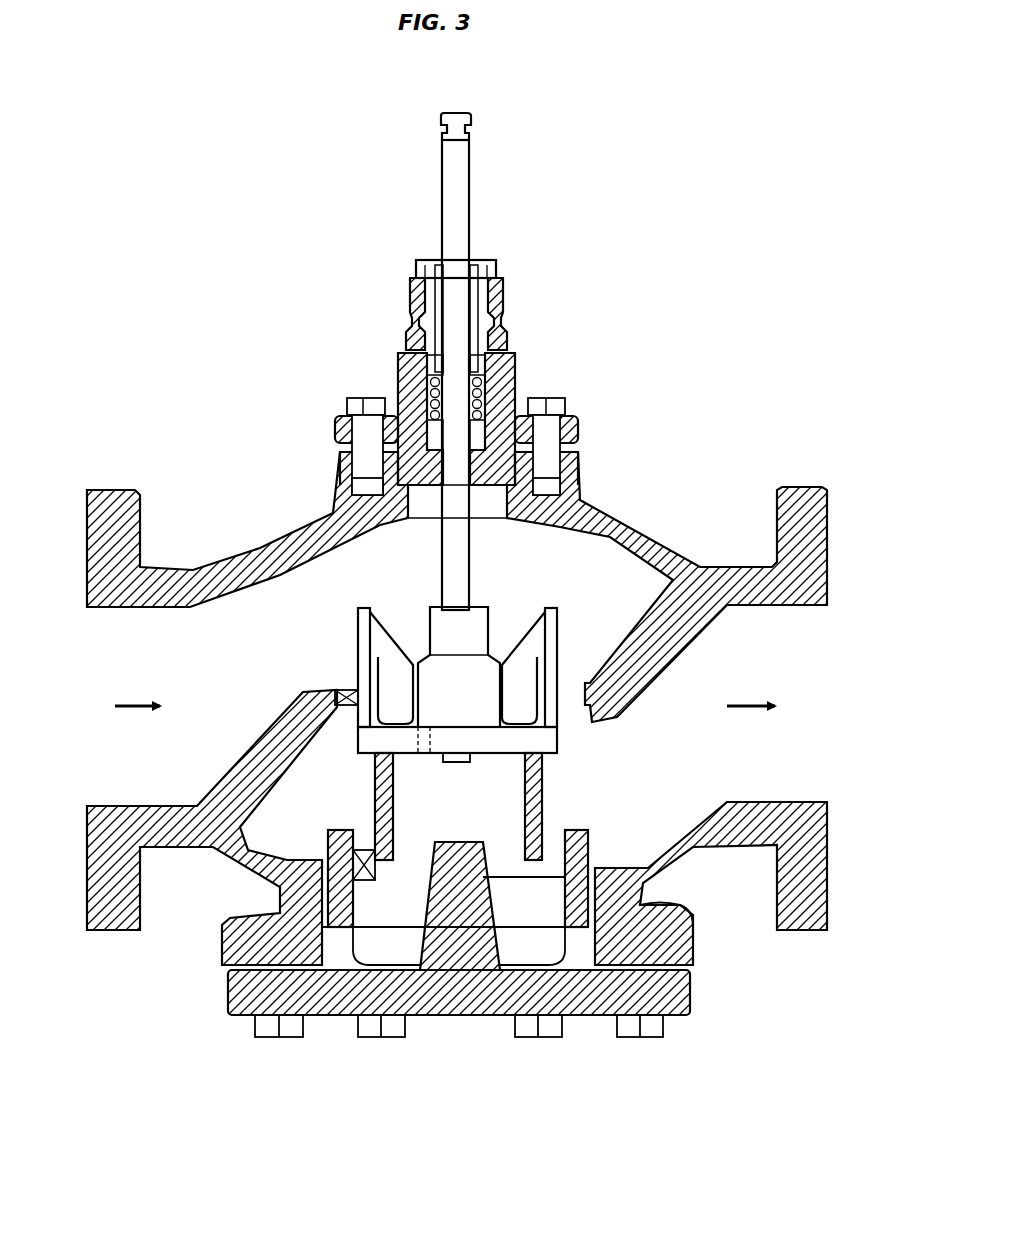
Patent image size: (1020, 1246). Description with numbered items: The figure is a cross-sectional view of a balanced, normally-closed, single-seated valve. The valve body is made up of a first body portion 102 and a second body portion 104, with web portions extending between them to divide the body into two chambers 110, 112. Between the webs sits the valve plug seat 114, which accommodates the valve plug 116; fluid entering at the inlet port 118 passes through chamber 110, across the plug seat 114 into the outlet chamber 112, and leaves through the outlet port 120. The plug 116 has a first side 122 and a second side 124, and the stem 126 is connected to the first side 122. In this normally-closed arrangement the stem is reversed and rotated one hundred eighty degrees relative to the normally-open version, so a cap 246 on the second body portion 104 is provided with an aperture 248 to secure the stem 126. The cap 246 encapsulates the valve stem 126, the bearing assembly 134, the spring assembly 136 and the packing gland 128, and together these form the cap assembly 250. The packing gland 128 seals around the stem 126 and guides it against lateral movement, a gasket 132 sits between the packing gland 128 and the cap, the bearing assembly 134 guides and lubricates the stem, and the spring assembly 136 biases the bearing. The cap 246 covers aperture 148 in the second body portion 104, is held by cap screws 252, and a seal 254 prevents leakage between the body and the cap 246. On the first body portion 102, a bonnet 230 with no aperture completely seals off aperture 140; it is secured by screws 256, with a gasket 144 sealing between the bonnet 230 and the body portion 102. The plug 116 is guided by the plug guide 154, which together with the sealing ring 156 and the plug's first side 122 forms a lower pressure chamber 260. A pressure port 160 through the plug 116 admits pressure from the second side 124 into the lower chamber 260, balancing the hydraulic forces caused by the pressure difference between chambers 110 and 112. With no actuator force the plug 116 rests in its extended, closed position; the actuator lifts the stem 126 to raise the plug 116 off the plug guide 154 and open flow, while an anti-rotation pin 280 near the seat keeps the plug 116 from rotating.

The first body portion 102 is at (828, 858).
The second body portion 104 is at (828, 540).
The chamber 110 is at (393, 566).
The outlet chamber 112 is at (715, 752).
The valve plug seat 114 is at (303, 700).
The valve plug 116 is at (358, 618).
The inlet port 118 is at (130, 680).
The outlet port 120 is at (828, 665).
The first side 122 is at (545, 760).
The second side 124 is at (560, 690).
The stem 126 is at (442, 180).
The packing gland 128 is at (496, 262).
The gasket 132 is at (503, 292).
The bearing assembly 134 is at (515, 395).
The spring assembly 136 is at (513, 360).
The aperture 140 is at (435, 1058).
The gasket 144 is at (668, 940).
The aperture 148 is at (495, 520).
The plug guide 154 is at (588, 845).
The sealing ring 156 is at (362, 880).
The pressure port 160 is at (378, 757).
The bonnet 230 is at (692, 995).
The cap 246 is at (578, 430).
The aperture 248 is at (478, 268).
The cap assembly 250 is at (368, 334).
The cap screws 252 is at (360, 398).
The seal 254 is at (570, 460).
The screws 256 is at (655, 1040).
The lower pressure chamber 260 is at (455, 880).
The anti-rotation pin 280 is at (338, 690).